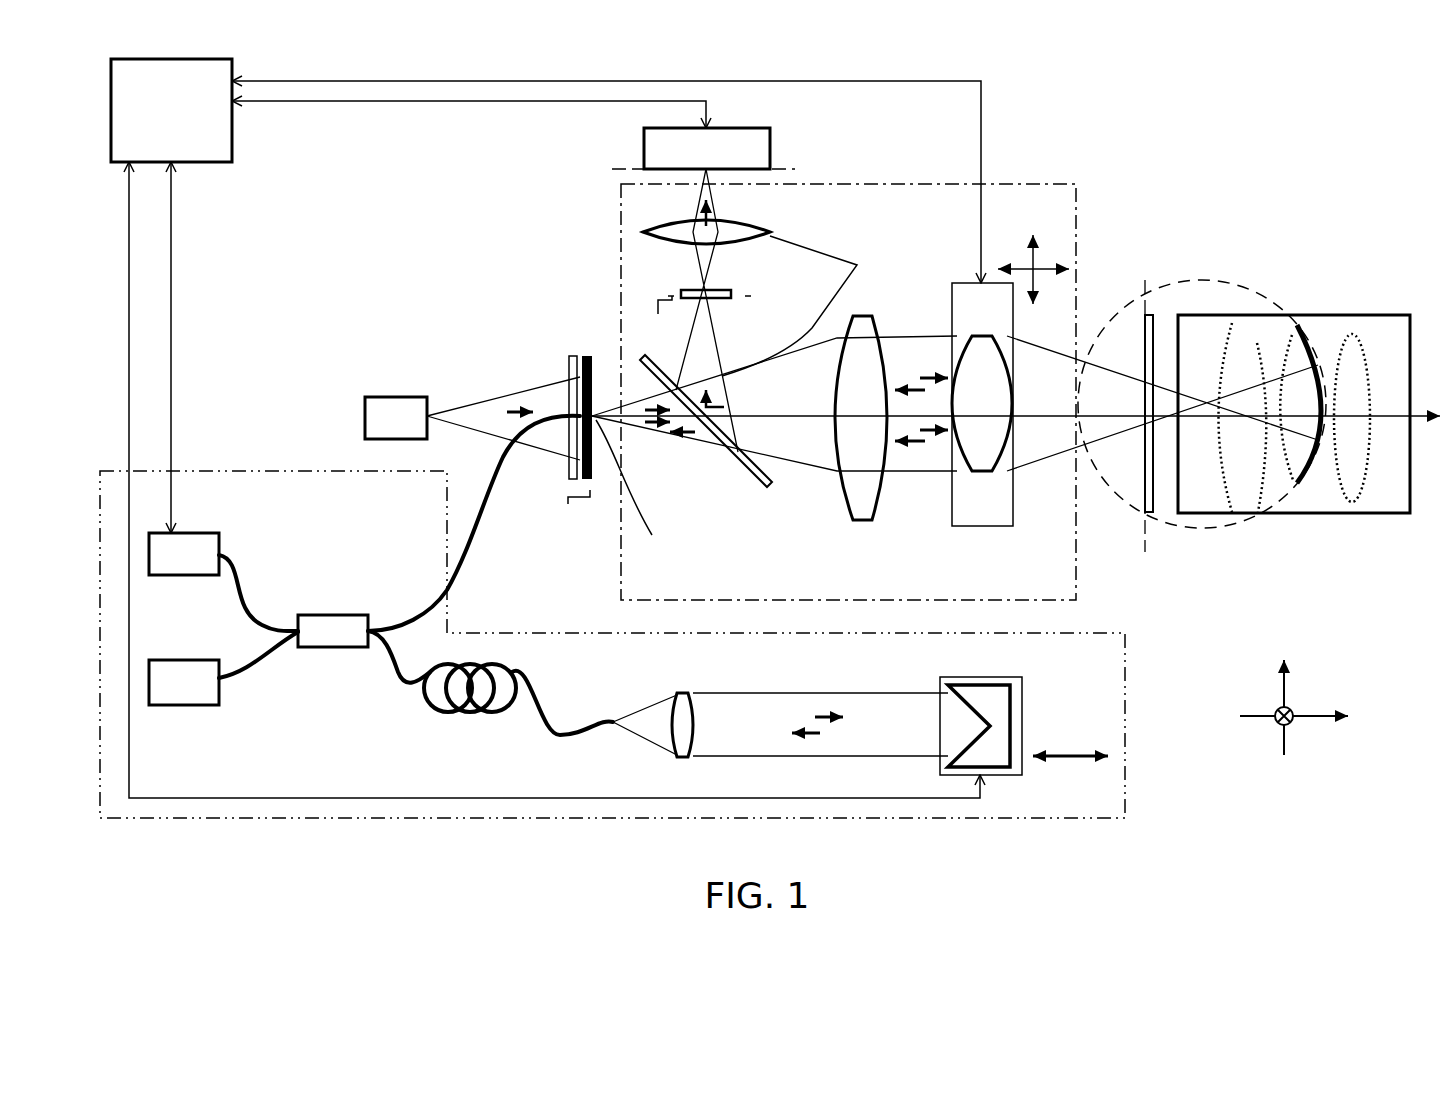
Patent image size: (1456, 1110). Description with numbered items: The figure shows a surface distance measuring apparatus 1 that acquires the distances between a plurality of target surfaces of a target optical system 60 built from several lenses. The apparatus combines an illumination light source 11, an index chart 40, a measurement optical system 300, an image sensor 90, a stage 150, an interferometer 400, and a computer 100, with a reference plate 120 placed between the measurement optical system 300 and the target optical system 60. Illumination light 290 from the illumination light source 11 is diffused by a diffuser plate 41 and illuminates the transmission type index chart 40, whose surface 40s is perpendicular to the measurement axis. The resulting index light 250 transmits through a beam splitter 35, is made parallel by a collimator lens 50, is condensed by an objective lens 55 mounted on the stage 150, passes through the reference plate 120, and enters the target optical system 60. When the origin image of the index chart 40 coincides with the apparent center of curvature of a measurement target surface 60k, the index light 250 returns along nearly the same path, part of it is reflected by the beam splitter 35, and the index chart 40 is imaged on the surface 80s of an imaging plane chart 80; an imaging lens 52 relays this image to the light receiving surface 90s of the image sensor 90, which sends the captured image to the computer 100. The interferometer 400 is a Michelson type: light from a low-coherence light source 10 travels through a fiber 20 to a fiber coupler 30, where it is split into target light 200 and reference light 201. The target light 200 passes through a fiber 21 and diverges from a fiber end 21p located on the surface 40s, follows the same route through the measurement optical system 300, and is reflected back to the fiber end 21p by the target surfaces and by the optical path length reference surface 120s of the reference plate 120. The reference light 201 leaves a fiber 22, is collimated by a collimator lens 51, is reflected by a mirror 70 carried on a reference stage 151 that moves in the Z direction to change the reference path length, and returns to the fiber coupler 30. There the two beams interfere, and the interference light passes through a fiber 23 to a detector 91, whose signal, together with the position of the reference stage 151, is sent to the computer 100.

The surface distance measuring apparatus 1 is at (834, 40).
The computer 100 is at (232, 160).
The image sensor 90 is at (770, 148).
The light receiving surface 90s is at (792, 171).
The measurement optical system 300 is at (1050, 184).
The imaging lens 52 is at (645, 228).
The imaging plane chart 80 is at (733, 292).
The surface of the imaging plane chart 80s is at (656, 319).
The index light 250 is at (652, 398).
The illumination light source 11 is at (396, 408).
The illumination light 290 is at (505, 420).
The index chart 40 is at (581, 357).
The diffuser plate 41 is at (568, 370).
The surface of the index chart 40s is at (574, 515).
The beam splitter 35 is at (769, 490).
The target light 200 is at (660, 434).
The fiber end 21p is at (640, 490).
The collimator lens 50 is at (856, 522).
The stage 150 is at (952, 282).
The objective lens 55 is at (993, 458).
The reference plate 120 is at (1150, 315).
The optical path length reference surface 120s is at (1143, 530).
The target optical system 60 is at (1388, 514).
The measurement target surface 60k is at (1310, 330).
The interferometer 400 is at (284, 470).
The detector 91 is at (212, 545).
The low-coherence light source 10 is at (192, 673).
The fiber coupler 30 is at (320, 624).
The fiber 23 is at (248, 598).
The fiber 20 is at (244, 668).
The fiber 21 is at (438, 612).
The fiber 22 is at (395, 662).
The collimator lens 51 is at (684, 693).
The reference light 201 is at (815, 728).
The mirror 70 is at (985, 695).
The stage 151 is at (1022, 730).